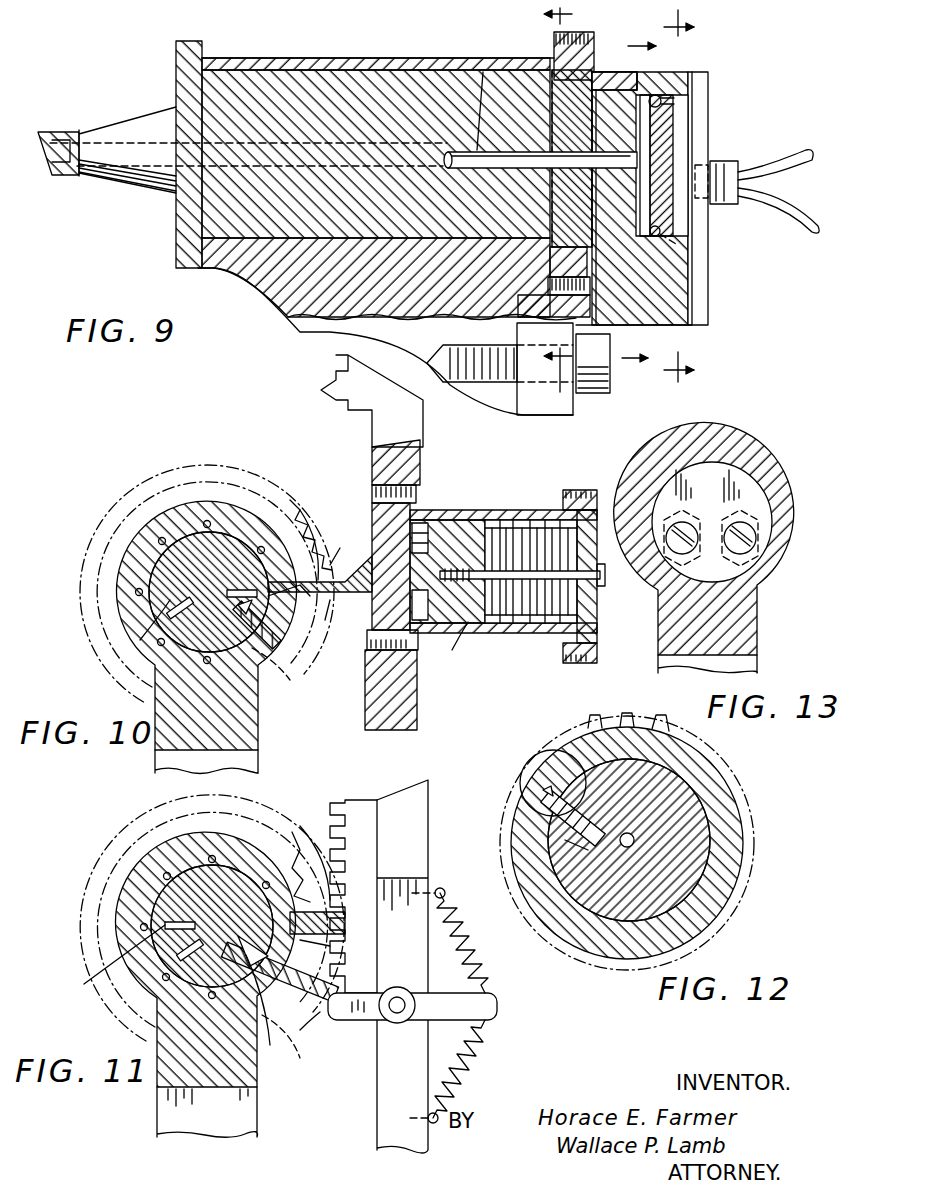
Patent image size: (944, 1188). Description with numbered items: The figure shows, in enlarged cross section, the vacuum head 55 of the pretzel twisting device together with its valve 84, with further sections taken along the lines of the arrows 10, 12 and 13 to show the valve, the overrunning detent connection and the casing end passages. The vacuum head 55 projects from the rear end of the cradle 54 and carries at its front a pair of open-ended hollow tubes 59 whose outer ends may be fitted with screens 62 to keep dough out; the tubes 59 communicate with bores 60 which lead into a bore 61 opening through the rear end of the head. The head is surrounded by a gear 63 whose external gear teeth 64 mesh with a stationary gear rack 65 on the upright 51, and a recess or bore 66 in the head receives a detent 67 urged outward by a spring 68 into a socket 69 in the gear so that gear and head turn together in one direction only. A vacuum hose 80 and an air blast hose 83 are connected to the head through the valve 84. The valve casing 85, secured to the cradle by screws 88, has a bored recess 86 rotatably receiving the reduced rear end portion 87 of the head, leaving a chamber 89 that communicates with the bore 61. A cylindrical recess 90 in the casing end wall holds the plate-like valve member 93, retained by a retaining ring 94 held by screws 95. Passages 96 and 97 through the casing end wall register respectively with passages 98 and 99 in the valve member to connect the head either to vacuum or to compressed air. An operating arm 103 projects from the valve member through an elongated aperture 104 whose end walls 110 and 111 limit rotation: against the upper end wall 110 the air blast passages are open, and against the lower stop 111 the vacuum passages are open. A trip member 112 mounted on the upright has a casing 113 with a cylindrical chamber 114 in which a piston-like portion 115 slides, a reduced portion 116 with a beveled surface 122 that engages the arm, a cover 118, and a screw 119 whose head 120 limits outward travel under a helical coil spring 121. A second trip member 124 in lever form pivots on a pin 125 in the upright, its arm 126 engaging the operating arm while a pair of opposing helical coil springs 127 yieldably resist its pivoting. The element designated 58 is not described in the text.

In FIG. 9, the section line 10— 10 is at (639, 201).
In FIG. 9, the section line 12— 12 is at (568, 199).
In FIG. 9, the section line 13— 13 is at (694, 197).
In FIG. 10, the upright 51 is at (420, 464).
In FIG. 11, the upright 51 is at (416, 836).
In FIG. 9, the cradle 54 is at (280, 300).
In FIG. 9, the vacuum head 55 is at (392, 76).
In FIG. 12, the vacuum head 55 is at (673, 840).
In FIG. 9, the sleeve 58 is at (343, 60).
In FIG. 9, the tubes 59 is at (130, 126).
In FIG. 9, the bores 60 is at (266, 56).
In FIG. 9, the bore 61 is at (458, 150).
In FIG. 12, the bore 61 is at (634, 844).
In FIG. 9, the screens 62 is at (55, 165).
In FIG. 9, the gear 63 is at (556, 60).
In FIG. 10, the gear 63 is at (286, 498).
In FIG. 12, the gear 63 is at (742, 838).
In FIG. 11, the gear 63 is at (270, 826).
In FIG. 9, the external gear teeth 64 is at (556, 38).
In FIG. 10, the external gear teeth 64 is at (320, 506).
In FIG. 12, the external gear teeth 64 is at (636, 714).
In FIG. 11, the external gear teeth 64 is at (310, 856).
In FIG. 9, the gear rack 65 is at (334, 394).
In FIG. 11, the gear rack 65 is at (358, 804).
In FIG. 12, the bore 66 is at (578, 780).
In FIG. 12, the detent 67 is at (552, 780).
In FIG. 12, the spring 68 is at (560, 842).
In FIG. 12, the socket 69 is at (545, 800).
In FIG. 9, the hose 80 is at (806, 218).
In FIG. 9, the hose 83 is at (792, 158).
In FIG. 9, the valve 84 is at (708, 256).
In FIG. 9, the valve casing 85 is at (670, 292).
In FIG. 10, the valve casing 85 is at (232, 505).
In FIG. 13, the valve casing 85 is at (762, 440).
In FIG. 11, the valve casing 85 is at (188, 832).
In FIG. 9, the bored recess 86 is at (605, 88).
In FIG. 9, the reduced rear end portion 87 is at (628, 100).
In FIG. 9, the screws 88 is at (490, 382).
In FIG. 9, the chamber 89 is at (655, 128).
In FIG. 9, the cylindrical recess 90 is at (668, 236).
In FIG. 9, the valve member 93 is at (668, 208).
In FIG. 10, the valve member 93 is at (170, 592).
In FIG. 11, the valve member 93 is at (175, 897).
In FIG. 9, the retaining ring 94 is at (665, 100).
In FIG. 9, the screws 95 is at (660, 280).
In FIG. 10, the screws 95 is at (210, 540).
In FIG. 11, the screws 95 is at (180, 880).
In FIG. 10, the passage 96 is at (250, 664).
In FIG. 13, the passage 96 is at (748, 546).
In FIG. 11, the passage 96 is at (205, 927).
In FIG. 10, the passage 97 is at (207, 583).
In FIG. 13, the passage 97 is at (676, 548).
In FIG. 11, the passage 97 is at (134, 1008).
In FIG. 10, the passage 98 is at (270, 640).
In FIG. 11, the passage 98 is at (265, 1002).
In FIG. 10, the passage 99 is at (140, 631).
In FIG. 11, the passage 99 is at (107, 966).
In FIG. 10, the operating arm 103 is at (312, 612).
In FIG. 11, the operating arm 103 is at (334, 968).
In FIG. 10, the elongated aperture 104 is at (272, 622).
In FIG. 11, the elongated aperture 104 is at (344, 939).
In FIG. 10, the upper end wall 110 is at (320, 556).
In FIG. 11, the upper end wall 110 is at (330, 926).
In FIG. 10, the lower stop 111 is at (293, 676).
In FIG. 11, the lower stop 111 is at (300, 1050).
In FIG. 10, the trip member 112 is at (482, 640).
In FIG. 10, the casing 113 is at (470, 520).
In FIG. 10, the cylindrical chamber 114 is at (426, 520).
In FIG. 10, the piston-like portion 115 is at (450, 646).
In FIG. 10, the reduced portion 116 is at (374, 522).
In FIG. 10, the cover 118 is at (592, 600).
In FIG. 10, the screw 119 is at (510, 640).
In FIG. 10, the head 120 is at (604, 586).
In FIG. 10, the helical coil spring 121 is at (536, 522).
In FIG. 10, the beveled surface portion 122 is at (348, 583).
In FIG. 11, the beveled surface portion 122 is at (316, 1033).
In FIG. 11, the trip member 124 is at (408, 992).
In FIG. 11, the pin 125 is at (396, 1012).
In FIG. 11, the arm 126 is at (352, 1014).
In FIG. 11, the helical coil springs 127 is at (482, 952).